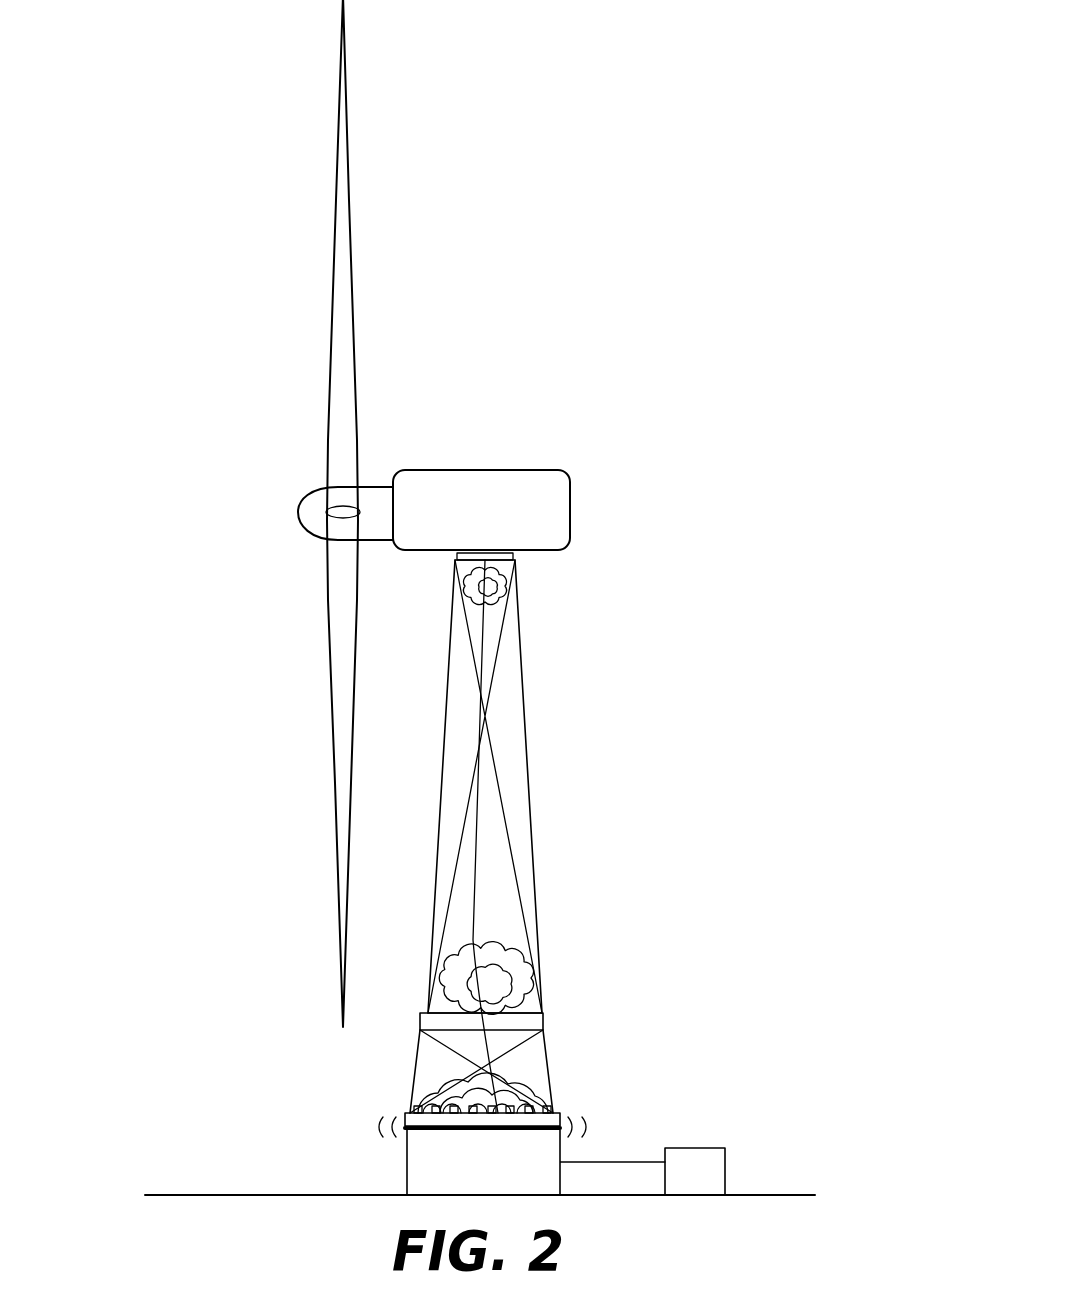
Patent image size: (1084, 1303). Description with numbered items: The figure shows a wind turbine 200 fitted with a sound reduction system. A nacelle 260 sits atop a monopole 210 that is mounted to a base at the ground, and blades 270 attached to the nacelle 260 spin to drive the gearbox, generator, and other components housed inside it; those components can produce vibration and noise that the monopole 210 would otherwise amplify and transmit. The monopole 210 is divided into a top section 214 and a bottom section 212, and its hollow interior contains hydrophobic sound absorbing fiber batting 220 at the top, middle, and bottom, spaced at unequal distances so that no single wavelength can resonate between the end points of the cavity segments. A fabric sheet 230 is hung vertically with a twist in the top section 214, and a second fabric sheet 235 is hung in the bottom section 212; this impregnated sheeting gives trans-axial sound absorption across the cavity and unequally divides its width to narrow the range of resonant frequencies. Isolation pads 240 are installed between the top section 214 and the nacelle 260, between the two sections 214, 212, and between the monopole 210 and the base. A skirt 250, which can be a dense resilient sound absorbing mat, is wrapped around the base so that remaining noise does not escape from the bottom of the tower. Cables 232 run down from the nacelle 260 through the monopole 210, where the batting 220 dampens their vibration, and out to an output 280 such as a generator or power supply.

The wind turbine 200 is at (752, 433).
The monopole 210 is at (684, 768).
The bottom section 212 is at (553, 1067).
The top section 214 is at (530, 778).
The hydrophobic sound absorbing fiber batting 220 is at (510, 587).
The fabric sheet 230 is at (490, 635).
The cables 232 is at (488, 712).
The fabric sheet 235 is at (467, 1042).
The isolation pad 240 is at (503, 552).
The skirt 250 is at (547, 1153).
The nacelle 260 is at (568, 500).
The blades 270 is at (330, 595).
The output 280 is at (708, 1160).